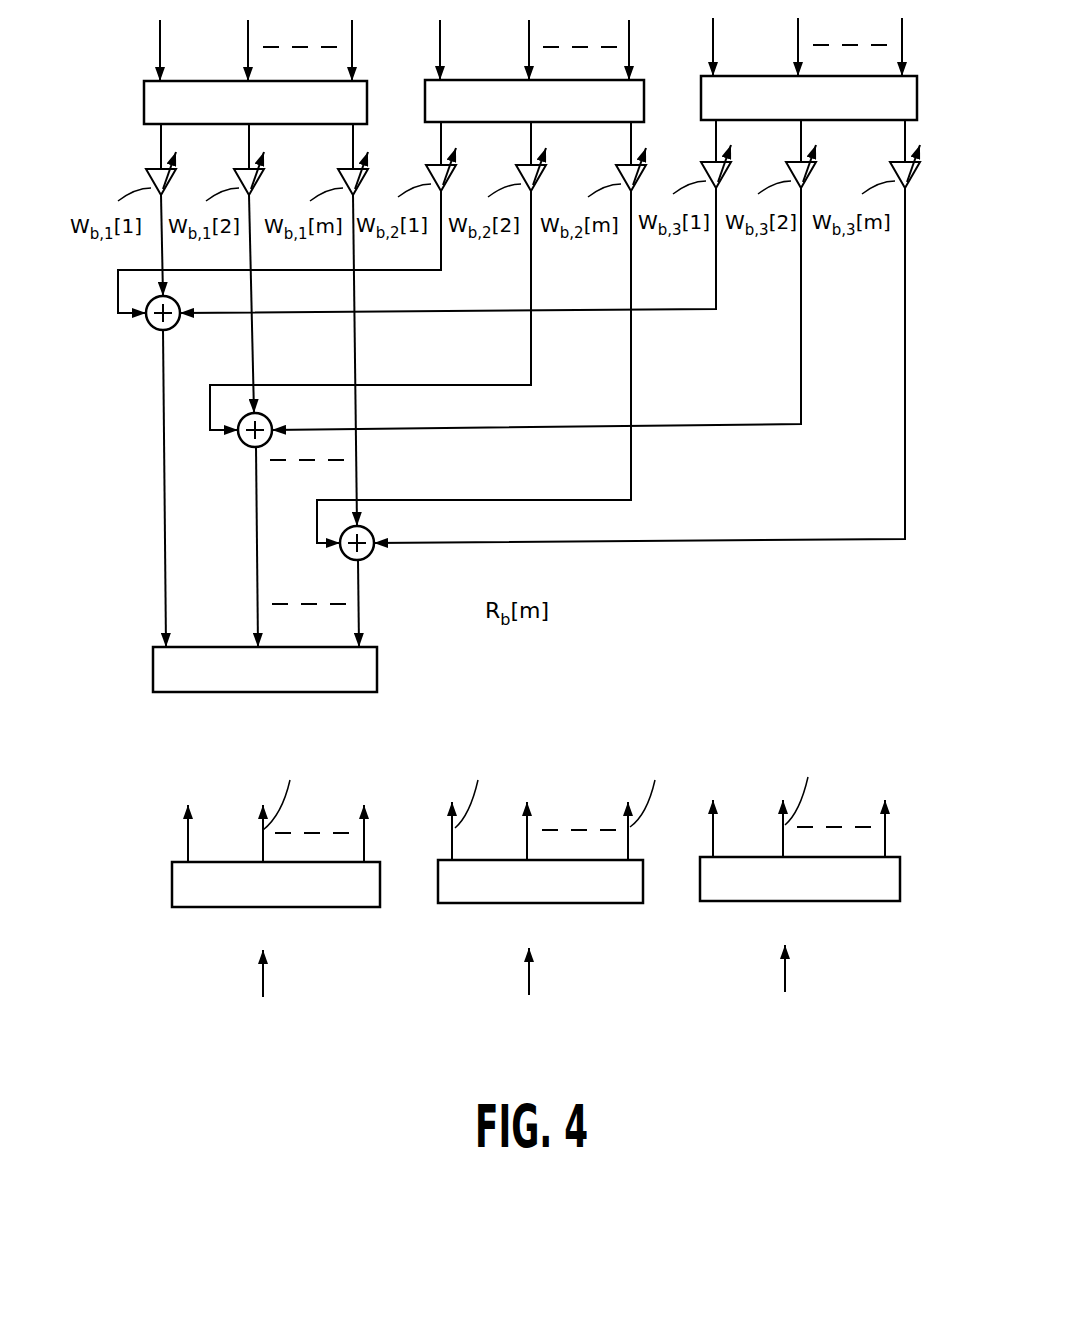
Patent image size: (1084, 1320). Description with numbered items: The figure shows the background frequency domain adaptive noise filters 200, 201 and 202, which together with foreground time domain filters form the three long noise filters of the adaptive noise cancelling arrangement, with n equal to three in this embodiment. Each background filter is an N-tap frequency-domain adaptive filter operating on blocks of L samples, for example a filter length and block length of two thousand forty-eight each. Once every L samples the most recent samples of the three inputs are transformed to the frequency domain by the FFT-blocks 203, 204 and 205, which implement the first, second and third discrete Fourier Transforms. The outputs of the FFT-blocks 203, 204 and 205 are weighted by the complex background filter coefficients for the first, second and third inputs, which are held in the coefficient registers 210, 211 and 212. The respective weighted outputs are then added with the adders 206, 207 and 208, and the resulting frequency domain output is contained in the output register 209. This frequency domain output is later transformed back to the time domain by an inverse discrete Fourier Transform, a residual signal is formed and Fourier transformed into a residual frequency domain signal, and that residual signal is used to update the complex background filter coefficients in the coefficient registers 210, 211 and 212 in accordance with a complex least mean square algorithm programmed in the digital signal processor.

The background frequency domain adaptive noise filter 200 is at (273, 894).
The background frequency domain adaptive noise filter 201 is at (539, 892).
The background frequency domain adaptive noise filter 202 is at (798, 890).
The FFT-block 203 is at (210, 88).
The FFT-block 204 is at (471, 82).
The FFT-block 205 is at (745, 80).
The adder 206 is at (151, 331).
The adder 207 is at (243, 447).
The adder 208 is at (348, 559).
The output register 209 is at (367, 673).
The coefficient register 210 is at (194, 898).
The coefficient register 211 is at (461, 895).
The coefficient register 212 is at (721, 893).